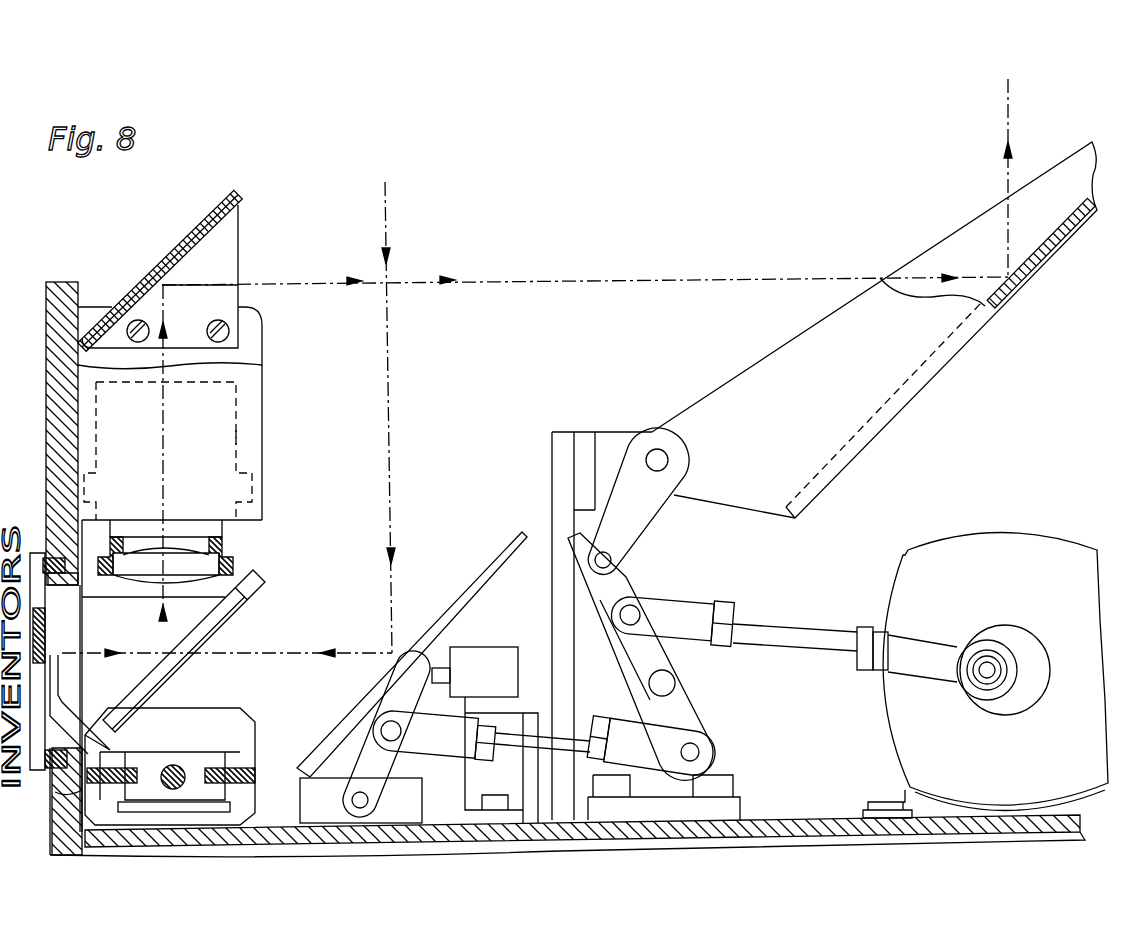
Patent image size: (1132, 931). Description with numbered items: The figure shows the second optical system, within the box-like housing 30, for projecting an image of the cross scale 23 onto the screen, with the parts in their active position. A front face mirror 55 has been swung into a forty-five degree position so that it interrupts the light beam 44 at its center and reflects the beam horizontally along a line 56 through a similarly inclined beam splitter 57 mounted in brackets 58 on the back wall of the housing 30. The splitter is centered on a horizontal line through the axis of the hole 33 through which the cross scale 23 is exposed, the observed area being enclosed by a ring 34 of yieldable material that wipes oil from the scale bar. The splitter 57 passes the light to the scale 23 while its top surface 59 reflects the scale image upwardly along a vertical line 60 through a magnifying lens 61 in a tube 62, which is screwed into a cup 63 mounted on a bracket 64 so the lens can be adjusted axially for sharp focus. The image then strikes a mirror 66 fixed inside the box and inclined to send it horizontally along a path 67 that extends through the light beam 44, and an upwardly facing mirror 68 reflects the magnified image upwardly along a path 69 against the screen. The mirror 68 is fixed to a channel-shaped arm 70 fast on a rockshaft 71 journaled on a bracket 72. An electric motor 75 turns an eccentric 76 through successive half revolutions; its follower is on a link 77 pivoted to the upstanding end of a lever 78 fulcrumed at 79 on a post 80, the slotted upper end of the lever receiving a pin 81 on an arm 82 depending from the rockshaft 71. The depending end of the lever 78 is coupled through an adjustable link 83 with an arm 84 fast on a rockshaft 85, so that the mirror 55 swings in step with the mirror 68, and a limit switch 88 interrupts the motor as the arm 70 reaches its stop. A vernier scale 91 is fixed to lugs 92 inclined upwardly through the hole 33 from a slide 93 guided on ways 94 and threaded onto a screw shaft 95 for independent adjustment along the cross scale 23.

The cross scale 23 is at (45, 622).
The box-like housing 30 is at (52, 352).
The hole 33 is at (66, 590).
The rings 34 is at (52, 778).
The light beam 44 is at (386, 235).
The front face mirror 55 is at (452, 598).
The line 56 is at (352, 653).
The beam splitter 57 is at (220, 625).
The brackets 58 is at (200, 598).
The top surface 59 is at (198, 629).
The vertical line 60 is at (166, 457).
The magnifying lens 61 is at (140, 576).
The tube 62 is at (226, 556).
The cup 63 is at (250, 435).
The bracket 64 is at (266, 405).
The mirror 66 is at (182, 272).
The path 67 is at (297, 285).
The upwardly facing mirror 68 is at (1022, 245).
The path 69 is at (1010, 140).
The channel-shaped arm 70 is at (762, 366).
The rockshaft 71 is at (668, 460).
The bracket 72 is at (558, 487).
The electric motor 75 is at (1034, 540).
The eccentric 76 is at (982, 678).
The link 77 is at (820, 652).
The lever 78 is at (702, 722).
The fulcrum 79 is at (676, 684).
The post 80 is at (634, 708).
The pin 81 is at (612, 563).
The arm 82 is at (650, 526).
The adjustable link 83 is at (508, 748).
The arm 84 is at (362, 757).
The rockshaft 85 is at (368, 800).
The limit switch 88 is at (500, 660).
The vernier scale 91 is at (66, 675).
The lugs 92 is at (72, 708).
The slide 93 is at (158, 752).
The ways 94 is at (118, 770).
The screw shaft 95 is at (178, 770).